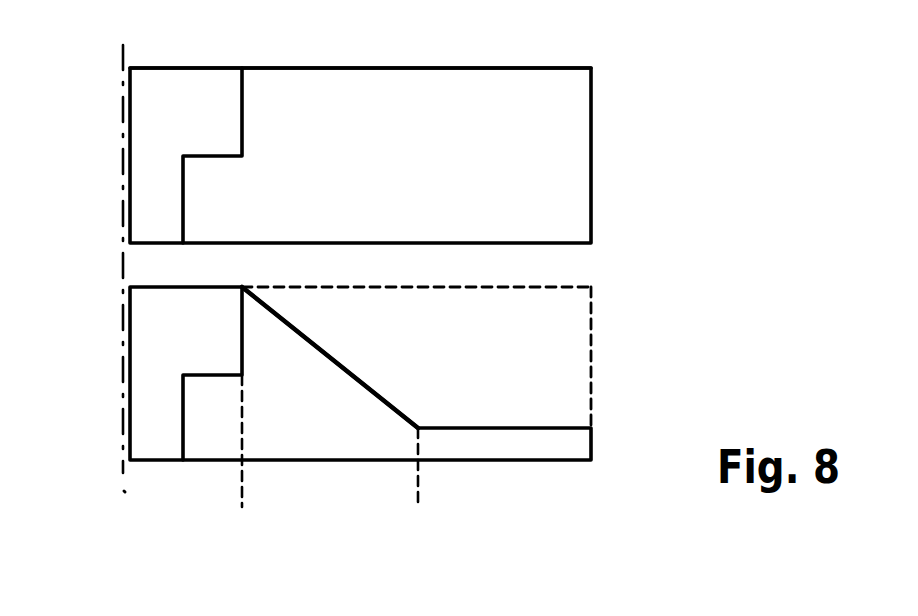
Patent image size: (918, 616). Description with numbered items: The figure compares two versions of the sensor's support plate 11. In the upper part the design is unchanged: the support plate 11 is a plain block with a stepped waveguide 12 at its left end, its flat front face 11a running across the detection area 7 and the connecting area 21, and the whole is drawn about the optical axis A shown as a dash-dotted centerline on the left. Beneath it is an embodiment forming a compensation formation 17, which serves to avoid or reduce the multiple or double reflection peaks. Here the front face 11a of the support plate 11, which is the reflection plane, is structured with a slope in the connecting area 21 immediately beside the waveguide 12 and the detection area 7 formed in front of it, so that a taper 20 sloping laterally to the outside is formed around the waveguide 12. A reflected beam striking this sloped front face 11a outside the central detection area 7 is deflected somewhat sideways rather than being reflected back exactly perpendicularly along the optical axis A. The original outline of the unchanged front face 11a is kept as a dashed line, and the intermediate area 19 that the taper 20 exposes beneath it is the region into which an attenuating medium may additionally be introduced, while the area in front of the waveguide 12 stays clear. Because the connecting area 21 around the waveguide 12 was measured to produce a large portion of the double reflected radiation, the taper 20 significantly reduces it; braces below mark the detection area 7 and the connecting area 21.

The detection area 7 is at (235, 530).
The support plate 11 is at (577, 185).
The support plate front face 11a is at (508, 48).
The waveguide 12 is at (183, 85).
The compensation formation 17 is at (642, 332).
The intermediate area 19 is at (550, 362).
The taper 20 is at (343, 367).
The connecting area 21 is at (420, 507).
The optical axis A is at (122, 463).